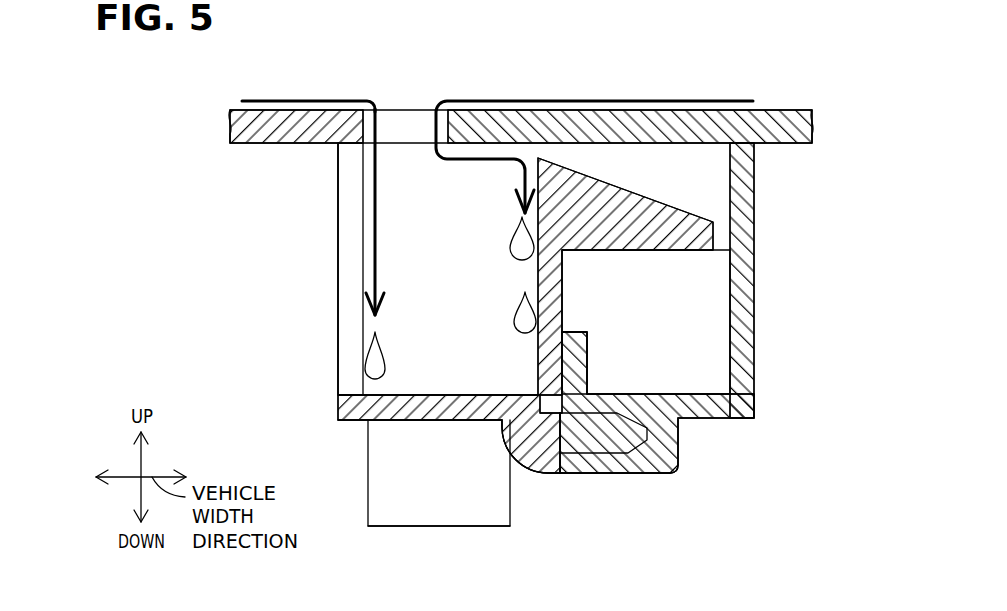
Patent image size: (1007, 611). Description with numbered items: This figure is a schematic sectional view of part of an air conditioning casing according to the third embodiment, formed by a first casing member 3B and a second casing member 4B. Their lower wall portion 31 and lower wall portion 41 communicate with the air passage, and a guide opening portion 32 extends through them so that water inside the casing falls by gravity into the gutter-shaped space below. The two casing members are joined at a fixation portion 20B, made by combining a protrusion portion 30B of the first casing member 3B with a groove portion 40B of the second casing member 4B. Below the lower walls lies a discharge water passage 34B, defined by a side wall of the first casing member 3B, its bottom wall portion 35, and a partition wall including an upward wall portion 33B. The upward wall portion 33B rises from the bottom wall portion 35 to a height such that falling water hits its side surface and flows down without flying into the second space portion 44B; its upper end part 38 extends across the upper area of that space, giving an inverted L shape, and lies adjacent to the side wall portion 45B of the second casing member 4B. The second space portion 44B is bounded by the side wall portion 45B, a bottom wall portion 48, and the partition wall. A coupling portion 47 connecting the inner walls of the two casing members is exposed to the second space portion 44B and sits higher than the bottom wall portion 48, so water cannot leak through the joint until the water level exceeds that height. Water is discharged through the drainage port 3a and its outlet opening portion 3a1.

The first casing member 3B is at (419, 331).
The lower wall portion 31 is at (280, 108).
The guide opening portion 32 is at (390, 108).
The discharge water passage 34B is at (400, 205).
The bottom wall portion 35 is at (413, 383).
The upward wall portion 33B is at (543, 352).
The drainage port 3a is at (368, 507).
The outlet opening portion 3a1 is at (457, 526).
The second casing member 4B is at (672, 298).
The lower wall portion 41 is at (673, 110).
The side wall portion 45B is at (747, 185).
The upper end part 38 is at (683, 250).
The second space portion 44B is at (695, 293).
The coupling portion 47 is at (563, 332).
The bottom wall portion 48 is at (677, 393).
The groove portion 40B is at (675, 455).
The fixation portion 20B is at (672, 475).
The protrusion portion 30B is at (623, 435).